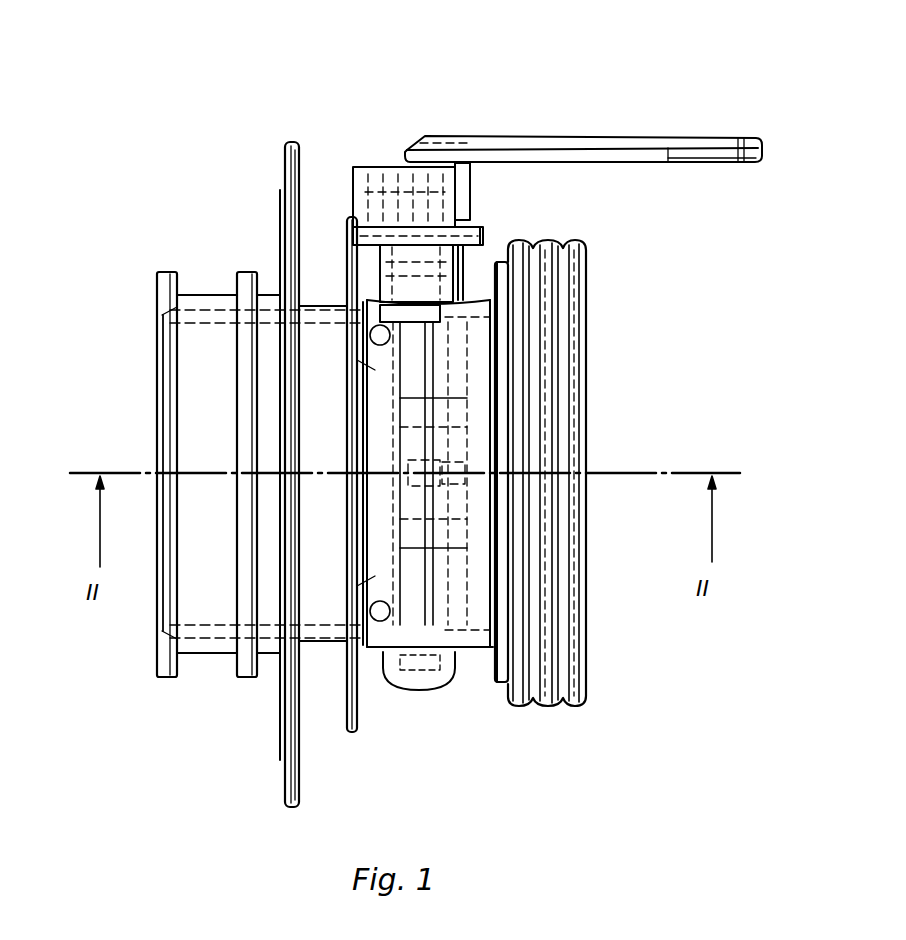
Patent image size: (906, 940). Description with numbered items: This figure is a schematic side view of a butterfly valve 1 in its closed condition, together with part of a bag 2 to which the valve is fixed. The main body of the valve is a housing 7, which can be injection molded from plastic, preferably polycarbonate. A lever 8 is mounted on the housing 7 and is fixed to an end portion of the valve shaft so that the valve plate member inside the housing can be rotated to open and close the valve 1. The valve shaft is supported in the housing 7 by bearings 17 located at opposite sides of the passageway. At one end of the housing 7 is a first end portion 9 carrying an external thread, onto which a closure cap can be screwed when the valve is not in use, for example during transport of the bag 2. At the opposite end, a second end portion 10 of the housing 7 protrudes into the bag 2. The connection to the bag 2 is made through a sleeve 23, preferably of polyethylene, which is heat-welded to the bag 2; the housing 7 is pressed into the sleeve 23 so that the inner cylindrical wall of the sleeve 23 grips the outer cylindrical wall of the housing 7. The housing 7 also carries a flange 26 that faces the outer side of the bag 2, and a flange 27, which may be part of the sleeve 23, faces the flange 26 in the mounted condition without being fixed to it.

The butterfly valve 1 is at (190, 92).
The bag 2 is at (280, 190).
The housing 7 is at (197, 340).
The lever 8 is at (623, 147).
The first end portion 9 is at (543, 700).
The second end portion 10 is at (185, 630).
The bearings 17 is at (462, 287).
The sleeve 23 is at (222, 653).
The flange 26 is at (297, 800).
The flange 27 is at (280, 707).